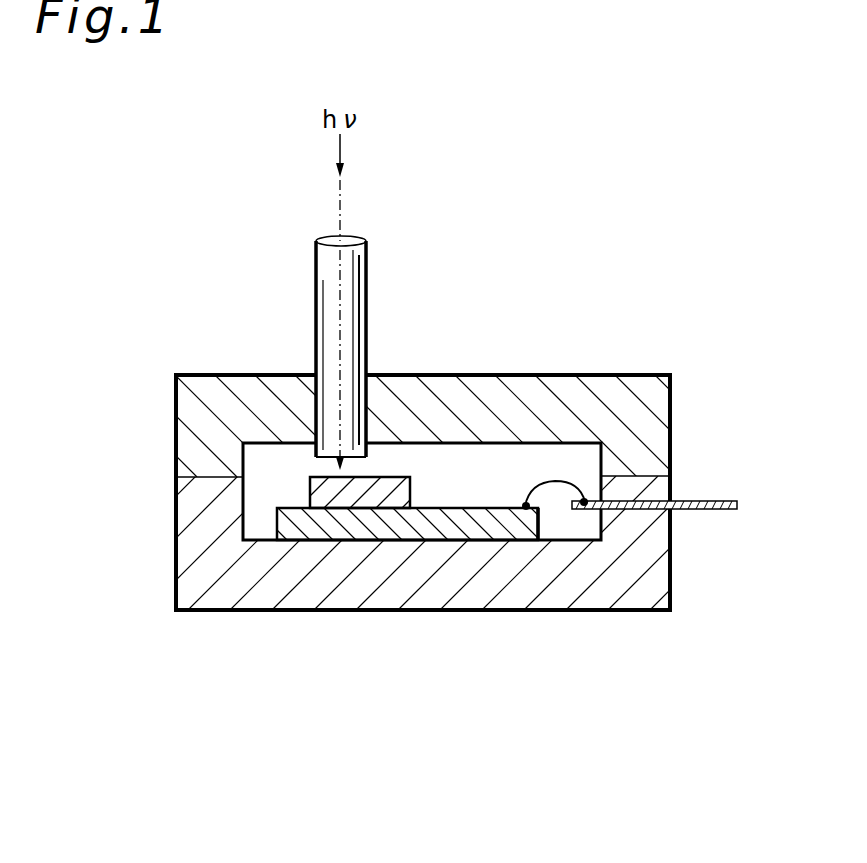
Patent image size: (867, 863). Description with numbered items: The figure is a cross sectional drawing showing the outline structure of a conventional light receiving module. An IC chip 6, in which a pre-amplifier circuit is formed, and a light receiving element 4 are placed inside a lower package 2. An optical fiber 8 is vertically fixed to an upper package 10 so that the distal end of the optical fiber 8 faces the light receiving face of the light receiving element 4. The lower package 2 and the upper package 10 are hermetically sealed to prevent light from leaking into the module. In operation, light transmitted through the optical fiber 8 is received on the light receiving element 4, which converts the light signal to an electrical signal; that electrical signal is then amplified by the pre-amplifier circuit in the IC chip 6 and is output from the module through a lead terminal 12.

The lower package 2 is at (662, 577).
The light receiving element 4 is at (317, 494).
The IC chip 6 is at (285, 530).
The optical fiber 8 is at (368, 293).
The upper package 10 is at (662, 422).
The lead terminal 12 is at (715, 500).